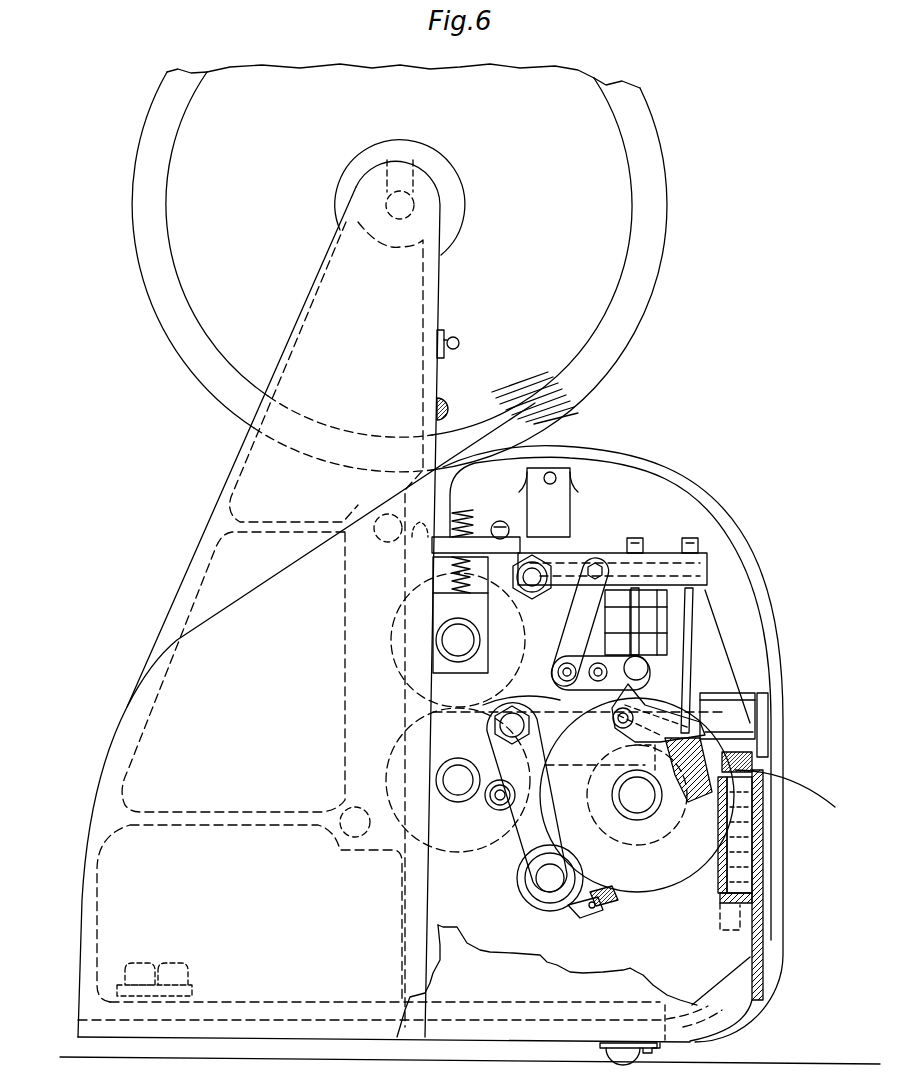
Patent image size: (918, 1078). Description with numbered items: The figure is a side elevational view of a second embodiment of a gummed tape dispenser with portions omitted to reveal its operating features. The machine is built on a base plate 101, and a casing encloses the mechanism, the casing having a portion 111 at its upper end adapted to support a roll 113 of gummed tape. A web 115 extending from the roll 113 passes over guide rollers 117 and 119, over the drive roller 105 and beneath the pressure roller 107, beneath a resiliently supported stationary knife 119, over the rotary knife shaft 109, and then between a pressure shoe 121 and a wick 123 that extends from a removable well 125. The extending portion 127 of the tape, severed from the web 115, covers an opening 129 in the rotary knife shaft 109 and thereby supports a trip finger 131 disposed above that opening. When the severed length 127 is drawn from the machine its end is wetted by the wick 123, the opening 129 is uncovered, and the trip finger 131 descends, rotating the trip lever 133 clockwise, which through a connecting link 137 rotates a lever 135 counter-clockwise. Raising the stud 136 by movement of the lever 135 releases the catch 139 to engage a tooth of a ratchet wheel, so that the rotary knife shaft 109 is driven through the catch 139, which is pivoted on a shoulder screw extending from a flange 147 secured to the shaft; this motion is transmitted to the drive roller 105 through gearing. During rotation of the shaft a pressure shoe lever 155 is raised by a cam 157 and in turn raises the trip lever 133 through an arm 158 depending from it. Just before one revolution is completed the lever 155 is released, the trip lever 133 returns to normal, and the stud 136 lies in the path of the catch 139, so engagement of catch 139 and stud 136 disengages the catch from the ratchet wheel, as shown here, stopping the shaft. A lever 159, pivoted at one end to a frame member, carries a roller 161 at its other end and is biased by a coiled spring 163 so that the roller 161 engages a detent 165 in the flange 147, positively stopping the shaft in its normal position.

The base plate 101 is at (240, 1030).
The drive roller 105 is at (468, 840).
The pressure roller 107 is at (418, 606).
The rotary knife shaft 109 is at (690, 787).
The casing portion 111 is at (225, 498).
The roll of gummed tape 113 is at (598, 318).
The web 115 is at (343, 668).
The guide roller 117 is at (372, 538).
The guide roller 119 is at (342, 836).
The pressure shoe 121 is at (770, 735).
The wick 123 is at (752, 782).
The removable well 125 is at (765, 833).
The extending portion of the tape 127 is at (792, 775).
The opening 129 is at (660, 750).
The trip finger 131 is at (692, 612).
The trip lever 133 is at (656, 555).
The lever 135 is at (610, 680).
The stud 136 is at (640, 660).
The connecting link 137 is at (583, 611).
The catch 139 is at (616, 724).
The flange 147 is at (652, 888).
The pressure shoe lever 155 is at (720, 700).
The cam 157 is at (646, 840).
The arm 158 is at (635, 618).
The lever 159 is at (562, 912).
The roller 161 is at (533, 895).
The coiled spring 163 is at (604, 904).
The detent 165 is at (575, 871).